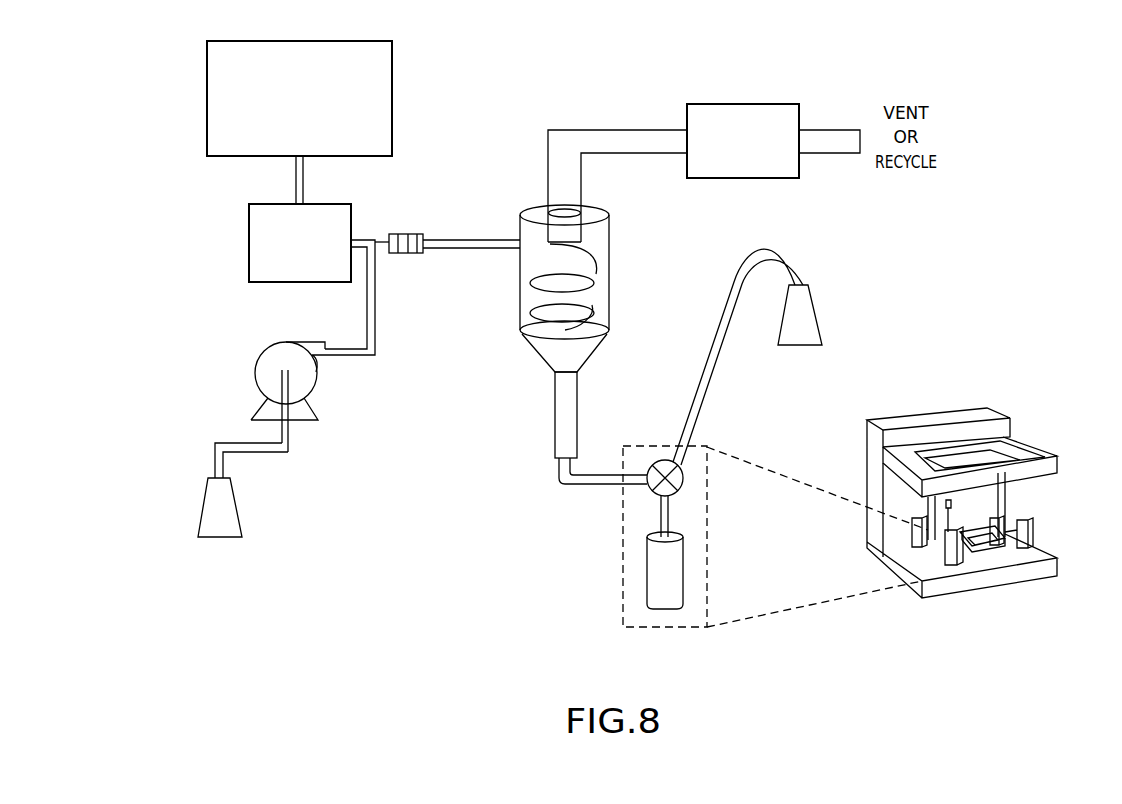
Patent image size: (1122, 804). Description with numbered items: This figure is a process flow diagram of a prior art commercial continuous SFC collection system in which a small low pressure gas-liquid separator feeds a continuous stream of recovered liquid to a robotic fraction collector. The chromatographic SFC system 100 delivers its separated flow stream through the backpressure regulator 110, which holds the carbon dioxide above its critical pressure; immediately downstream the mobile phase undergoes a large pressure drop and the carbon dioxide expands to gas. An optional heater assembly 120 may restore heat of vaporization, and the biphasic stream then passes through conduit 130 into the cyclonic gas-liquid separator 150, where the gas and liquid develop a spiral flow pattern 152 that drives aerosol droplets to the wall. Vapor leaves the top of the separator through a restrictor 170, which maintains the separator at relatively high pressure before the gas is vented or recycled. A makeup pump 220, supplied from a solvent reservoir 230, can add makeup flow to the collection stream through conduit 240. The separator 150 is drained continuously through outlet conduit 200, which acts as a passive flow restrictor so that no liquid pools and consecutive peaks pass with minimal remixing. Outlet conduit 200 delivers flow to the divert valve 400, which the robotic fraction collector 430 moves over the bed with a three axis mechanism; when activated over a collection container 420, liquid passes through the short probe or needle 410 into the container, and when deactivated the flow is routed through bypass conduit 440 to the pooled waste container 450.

The chromatographic SFC system 100 is at (392, 86).
The backpressure regulator (BPR) 110 is at (270, 282).
The heater assembly 120 is at (407, 253).
The conduit 130 is at (466, 240).
The gas-liquid separator 150 is at (609, 240).
The spiral flow pattern 152 is at (536, 305).
The restrictor 170 is at (733, 104).
The outlet conduit 200 is at (575, 484).
The pump 220 is at (312, 410).
The solvent reservoir 230 is at (238, 503).
The conduit 240 is at (375, 330).
The divert valve 400 is at (685, 472).
The short probe or needle 410 is at (668, 513).
The collection container 420 is at (665, 607).
The robotic fraction collector 430 is at (1024, 404).
The bypass conduit 440 is at (706, 351).
The pooled waste container 450 is at (818, 312).